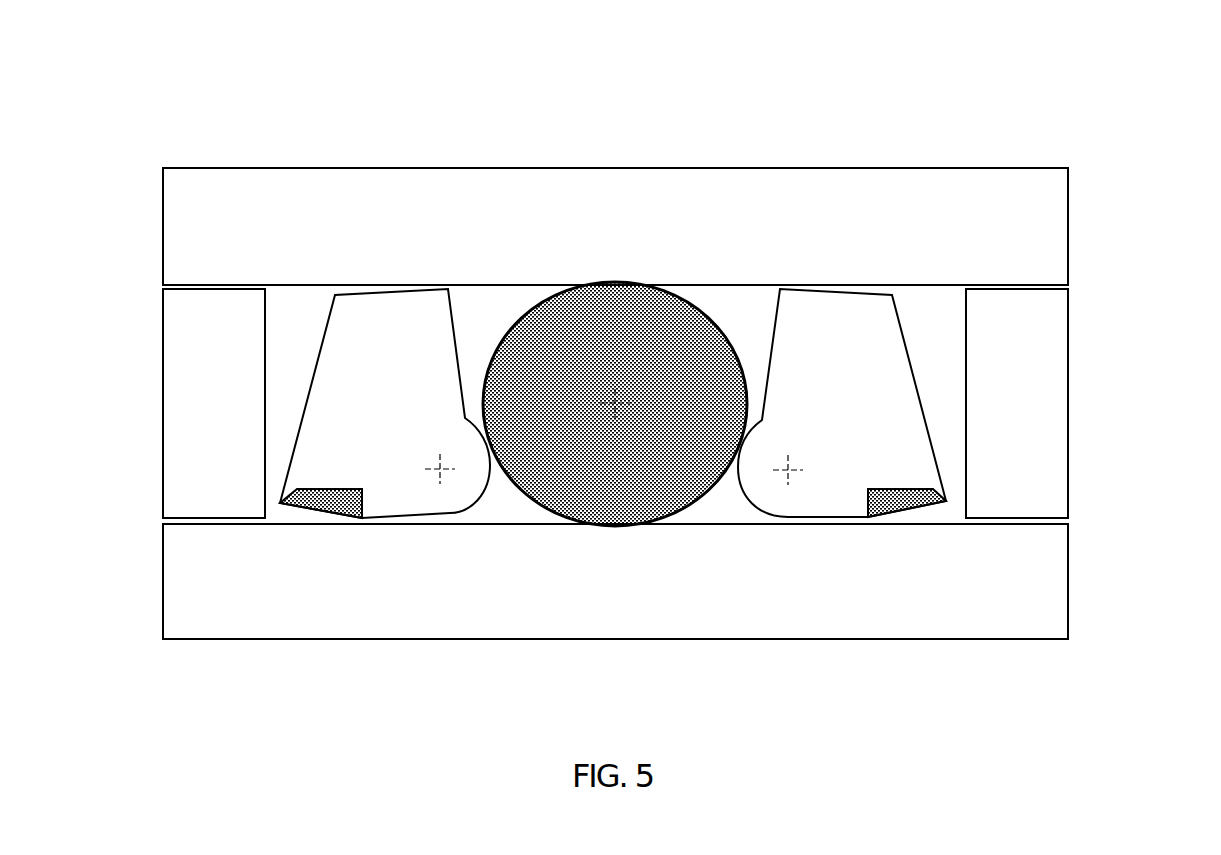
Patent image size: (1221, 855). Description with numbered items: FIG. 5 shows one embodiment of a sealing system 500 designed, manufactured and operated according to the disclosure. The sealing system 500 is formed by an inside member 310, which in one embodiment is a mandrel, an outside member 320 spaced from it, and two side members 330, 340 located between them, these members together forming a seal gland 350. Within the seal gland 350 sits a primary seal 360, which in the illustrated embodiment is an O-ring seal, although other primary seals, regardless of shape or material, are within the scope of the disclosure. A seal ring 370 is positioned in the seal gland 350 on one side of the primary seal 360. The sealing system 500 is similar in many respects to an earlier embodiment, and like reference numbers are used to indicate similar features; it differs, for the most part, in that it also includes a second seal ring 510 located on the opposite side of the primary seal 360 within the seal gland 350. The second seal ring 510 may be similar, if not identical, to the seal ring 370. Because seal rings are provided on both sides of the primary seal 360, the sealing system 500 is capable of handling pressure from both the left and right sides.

The sealing system 500 is at (114, 97).
The inside member 310 is at (1068, 596).
The outside member 320 is at (1068, 218).
The side member 330 is at (163, 366).
The side member 340 is at (1068, 373).
The seal gland 350 is at (318, 325).
The primary seal 360 is at (628, 338).
The seal ring 370 is at (856, 337).
The second seal ring 510 is at (405, 337).